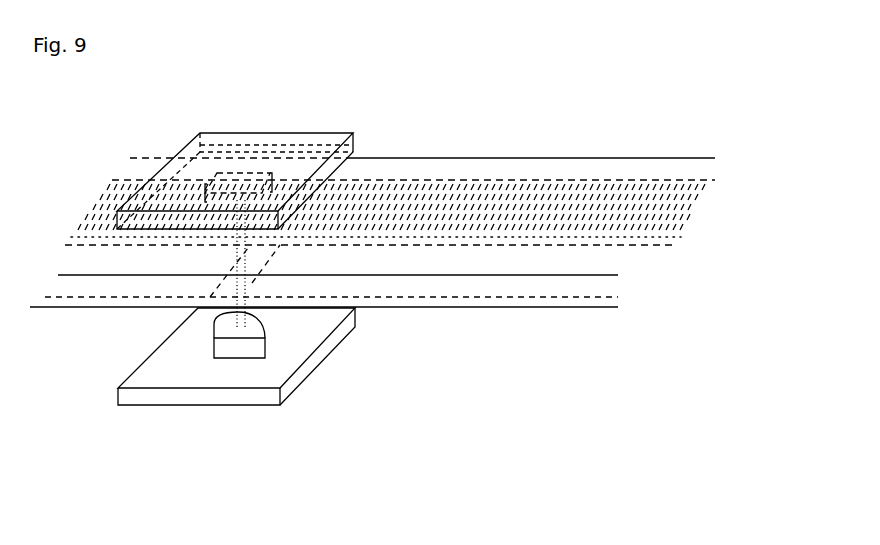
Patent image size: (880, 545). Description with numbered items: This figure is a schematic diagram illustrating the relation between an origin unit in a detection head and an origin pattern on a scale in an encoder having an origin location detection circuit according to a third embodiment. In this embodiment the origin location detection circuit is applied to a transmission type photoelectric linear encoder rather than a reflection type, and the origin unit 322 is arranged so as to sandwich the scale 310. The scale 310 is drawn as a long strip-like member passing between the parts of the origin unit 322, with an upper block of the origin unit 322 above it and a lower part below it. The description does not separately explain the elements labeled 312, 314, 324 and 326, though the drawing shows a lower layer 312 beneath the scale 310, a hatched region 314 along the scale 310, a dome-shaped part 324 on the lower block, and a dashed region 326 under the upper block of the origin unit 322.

The scale 310 is at (497, 160).
The lower layer 312 is at (488, 283).
The hatched coating region 314 is at (552, 197).
The origin unit 322 is at (258, 123).
The semi-cylindrical protrusion 324 is at (253, 334).
The pattern region 326 is at (250, 172).